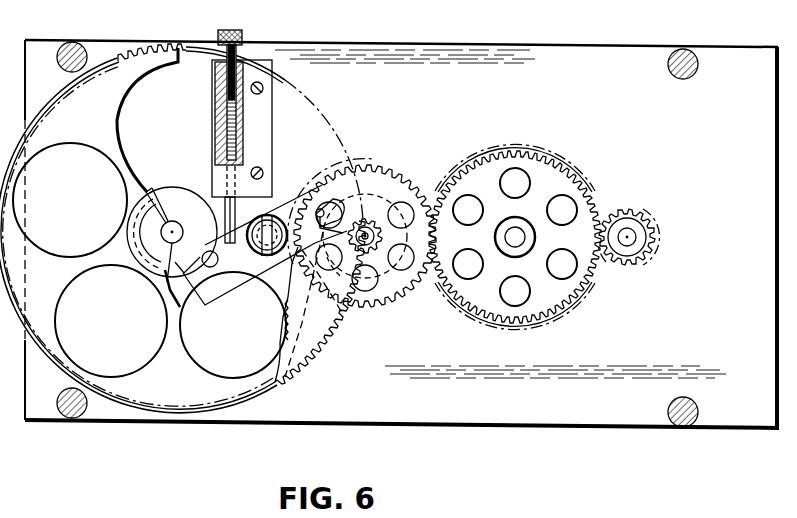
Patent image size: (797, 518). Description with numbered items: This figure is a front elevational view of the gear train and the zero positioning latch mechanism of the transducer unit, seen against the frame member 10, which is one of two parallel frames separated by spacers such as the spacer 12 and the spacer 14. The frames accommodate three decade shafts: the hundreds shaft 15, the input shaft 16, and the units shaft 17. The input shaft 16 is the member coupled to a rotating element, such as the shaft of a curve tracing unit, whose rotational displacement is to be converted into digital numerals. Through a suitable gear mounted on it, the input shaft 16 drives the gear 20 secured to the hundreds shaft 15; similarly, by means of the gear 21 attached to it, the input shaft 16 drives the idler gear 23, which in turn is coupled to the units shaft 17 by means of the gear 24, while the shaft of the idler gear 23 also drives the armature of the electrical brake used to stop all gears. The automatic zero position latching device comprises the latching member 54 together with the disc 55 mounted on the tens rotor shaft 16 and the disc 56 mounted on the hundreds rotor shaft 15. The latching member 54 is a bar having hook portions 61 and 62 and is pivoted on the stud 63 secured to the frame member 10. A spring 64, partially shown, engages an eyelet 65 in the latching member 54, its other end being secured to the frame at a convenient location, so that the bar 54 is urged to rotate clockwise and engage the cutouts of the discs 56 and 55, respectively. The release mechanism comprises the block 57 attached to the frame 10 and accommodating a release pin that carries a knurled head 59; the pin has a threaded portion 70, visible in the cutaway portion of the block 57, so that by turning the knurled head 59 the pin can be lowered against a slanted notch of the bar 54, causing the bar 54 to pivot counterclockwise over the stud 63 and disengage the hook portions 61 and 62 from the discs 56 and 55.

The frame member 10 is at (589, 105).
The spacer 12 is at (80, 50).
The spacer 14 is at (690, 56).
The hundreds shaft 15 is at (177, 227).
The input shaft 16 is at (373, 216).
The decade shaft 17 is at (631, 236).
The gear 20 is at (61, 120).
The gear 21 is at (404, 292).
The idler gear 23 is at (584, 270).
The gear 24 is at (612, 262).
The latching member 54 is at (298, 181).
The disc 55 is at (365, 220).
The disc 56 is at (172, 198).
The block 57 is at (268, 128).
The knurled head 59 is at (240, 36).
The hook portion 61 is at (187, 296).
The hook portion 62 is at (347, 216).
The stud 63 is at (268, 266).
The spring 64 is at (317, 341).
The eyelet 65 is at (323, 208).
The threaded portion 70 is at (221, 128).